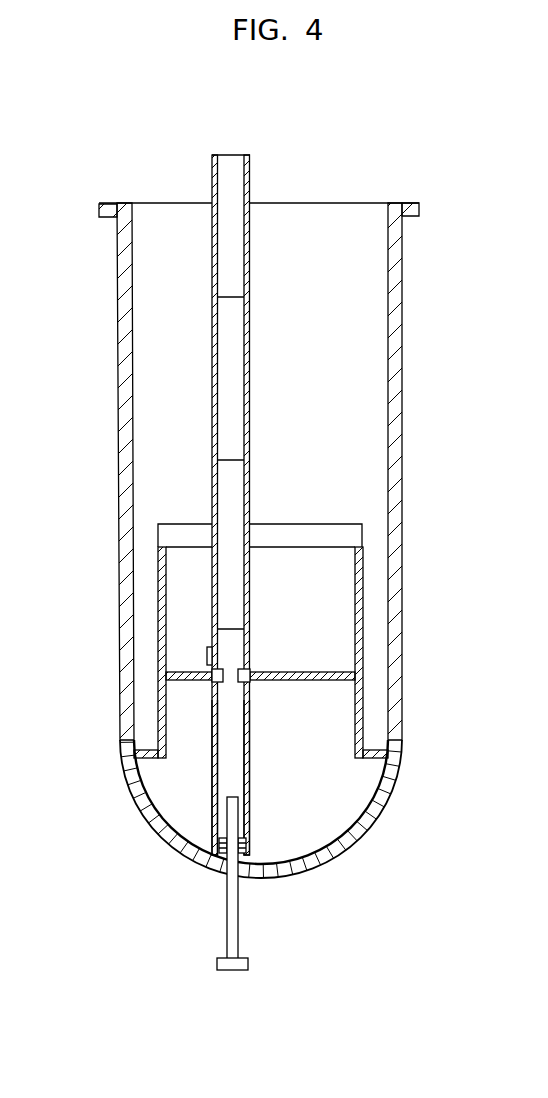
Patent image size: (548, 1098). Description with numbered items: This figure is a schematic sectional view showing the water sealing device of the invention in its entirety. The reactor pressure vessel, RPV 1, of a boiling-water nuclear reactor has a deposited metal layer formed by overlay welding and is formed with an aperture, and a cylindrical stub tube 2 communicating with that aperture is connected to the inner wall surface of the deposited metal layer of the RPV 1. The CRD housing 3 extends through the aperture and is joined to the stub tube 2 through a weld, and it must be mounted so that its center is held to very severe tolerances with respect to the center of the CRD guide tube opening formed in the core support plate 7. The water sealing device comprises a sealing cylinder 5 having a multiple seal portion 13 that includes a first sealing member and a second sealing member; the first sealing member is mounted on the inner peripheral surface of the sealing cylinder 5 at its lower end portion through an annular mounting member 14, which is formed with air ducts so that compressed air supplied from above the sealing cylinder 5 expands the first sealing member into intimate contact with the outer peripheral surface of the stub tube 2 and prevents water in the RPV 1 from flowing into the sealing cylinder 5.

The RPV 1 is at (120, 758).
The stub tube 2 is at (212, 832).
The CRD housing 3 is at (238, 812).
The sealing cylinder 5 is at (214, 730).
The core support plate 7 is at (318, 672).
The multiple seal portion 13 is at (250, 848).
The annular mounting member 14 is at (207, 647).